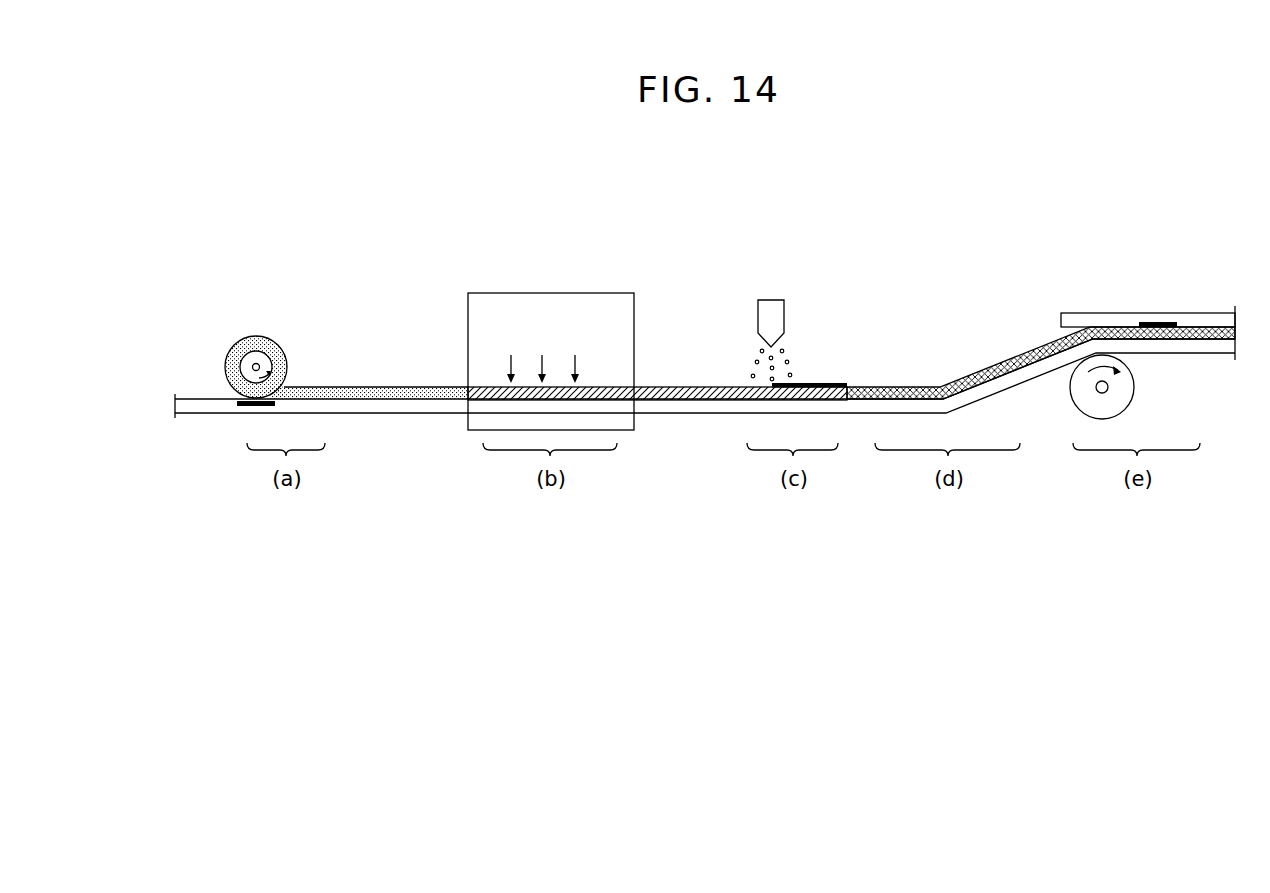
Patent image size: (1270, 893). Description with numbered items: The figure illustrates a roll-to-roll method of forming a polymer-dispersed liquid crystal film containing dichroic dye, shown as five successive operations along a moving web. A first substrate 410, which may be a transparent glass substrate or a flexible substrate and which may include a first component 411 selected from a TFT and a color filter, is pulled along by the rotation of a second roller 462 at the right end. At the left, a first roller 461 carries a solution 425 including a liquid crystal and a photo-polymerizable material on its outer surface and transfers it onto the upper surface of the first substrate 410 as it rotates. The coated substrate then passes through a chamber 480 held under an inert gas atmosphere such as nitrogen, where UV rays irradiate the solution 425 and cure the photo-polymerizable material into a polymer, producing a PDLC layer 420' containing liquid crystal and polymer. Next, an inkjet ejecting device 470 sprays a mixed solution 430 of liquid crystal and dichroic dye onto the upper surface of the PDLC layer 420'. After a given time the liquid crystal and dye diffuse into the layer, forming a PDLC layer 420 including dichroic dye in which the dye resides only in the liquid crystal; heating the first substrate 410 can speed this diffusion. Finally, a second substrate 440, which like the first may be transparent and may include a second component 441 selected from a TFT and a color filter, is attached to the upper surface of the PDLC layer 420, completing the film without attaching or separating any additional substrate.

The first substrate 410 is at (200, 405).
The first component 411 is at (247, 406).
The solution 425 is at (378, 387).
The first roller 461 is at (265, 352).
The chamber 480 is at (522, 293).
The PDLC layer 420' is at (657, 363).
The inkjet ejecting device 470 is at (773, 300).
The mixed solution 430 is at (824, 383).
The PDLC layer including dichroic dye 420 is at (1041, 356).
The second substrate 440 is at (1078, 313).
The second component 441 is at (1165, 322).
The second roller 462 is at (1131, 391).